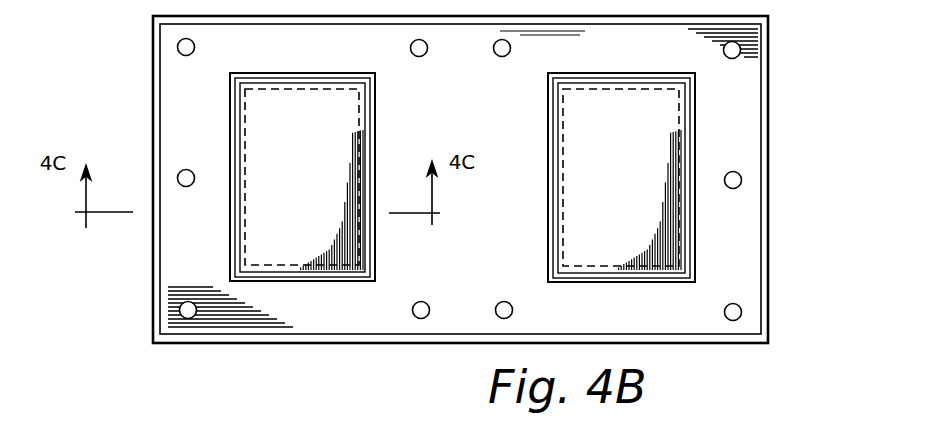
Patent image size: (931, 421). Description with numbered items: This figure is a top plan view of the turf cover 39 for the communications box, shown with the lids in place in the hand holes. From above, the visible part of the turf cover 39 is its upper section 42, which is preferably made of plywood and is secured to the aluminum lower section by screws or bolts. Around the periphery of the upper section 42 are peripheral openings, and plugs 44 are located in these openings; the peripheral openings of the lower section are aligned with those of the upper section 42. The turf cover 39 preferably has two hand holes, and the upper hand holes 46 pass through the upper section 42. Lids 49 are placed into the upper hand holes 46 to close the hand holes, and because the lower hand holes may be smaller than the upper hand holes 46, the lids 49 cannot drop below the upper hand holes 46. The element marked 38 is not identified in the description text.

The face plate outer frame 38 is at (768, 32).
The turf cover 39 is at (771, 140).
The upper section 42 is at (738, 258).
The plugs 44 is at (425, 52).
The upper hand holes 46 is at (246, 140).
The lids 49 is at (286, 184).